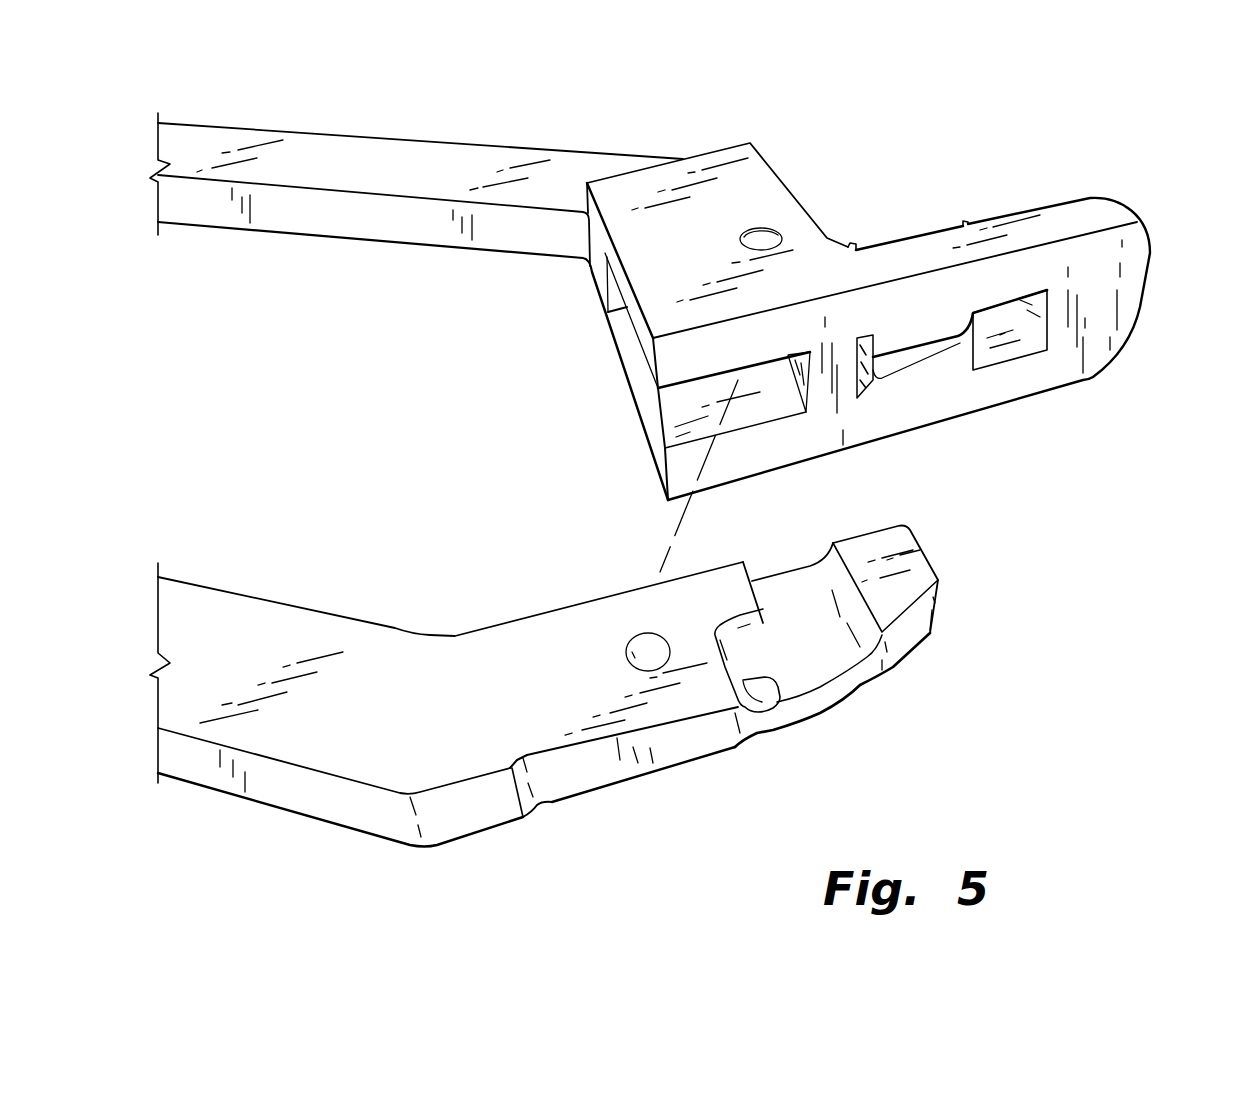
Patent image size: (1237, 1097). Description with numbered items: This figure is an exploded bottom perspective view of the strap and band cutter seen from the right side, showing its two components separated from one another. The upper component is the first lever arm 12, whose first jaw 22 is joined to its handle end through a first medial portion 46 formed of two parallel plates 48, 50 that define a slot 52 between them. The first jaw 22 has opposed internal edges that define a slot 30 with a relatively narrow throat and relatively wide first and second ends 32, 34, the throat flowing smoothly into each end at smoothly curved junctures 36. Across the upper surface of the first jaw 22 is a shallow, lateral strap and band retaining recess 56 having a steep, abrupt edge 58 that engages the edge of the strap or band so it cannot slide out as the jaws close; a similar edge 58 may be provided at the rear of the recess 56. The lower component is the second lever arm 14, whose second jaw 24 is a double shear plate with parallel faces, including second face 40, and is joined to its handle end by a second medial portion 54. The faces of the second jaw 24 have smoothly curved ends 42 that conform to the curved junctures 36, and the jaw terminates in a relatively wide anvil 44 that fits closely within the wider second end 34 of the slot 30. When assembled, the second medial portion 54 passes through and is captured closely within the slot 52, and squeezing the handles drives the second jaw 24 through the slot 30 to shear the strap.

The first lever arm 12 is at (327, 237).
The second lever arm 14 is at (268, 601).
The first jaw 22 is at (1068, 197).
The second jaw 24 is at (827, 700).
The slot 30 is at (938, 350).
The first end of slot 32 is at (868, 397).
The second end of slot 34 is at (1018, 353).
The curved junctures 36 is at (963, 334).
The second face 40 is at (827, 660).
The curved ends 42 is at (778, 692).
The anvil 44 is at (927, 553).
The first medial portion 46 is at (628, 377).
The first plate 48 is at (737, 483).
The second plate 50 is at (788, 173).
The slot of first medial portion 52 is at (775, 398).
The second medial portion 54 is at (663, 757).
The strap and band retaining recess 56 is at (910, 236).
The abrupt edge 58 is at (856, 248).